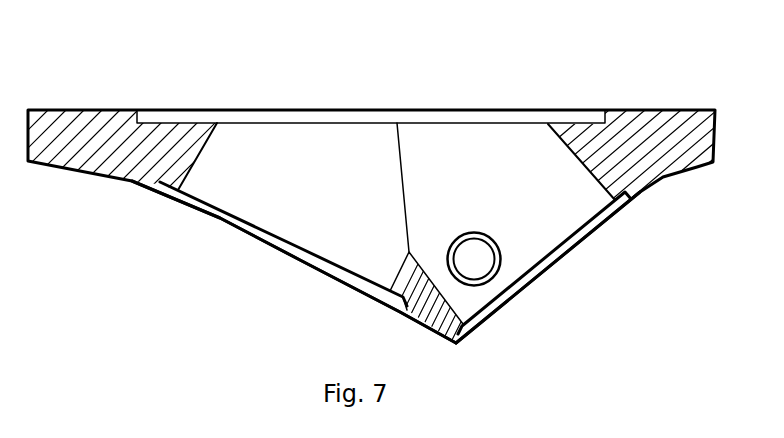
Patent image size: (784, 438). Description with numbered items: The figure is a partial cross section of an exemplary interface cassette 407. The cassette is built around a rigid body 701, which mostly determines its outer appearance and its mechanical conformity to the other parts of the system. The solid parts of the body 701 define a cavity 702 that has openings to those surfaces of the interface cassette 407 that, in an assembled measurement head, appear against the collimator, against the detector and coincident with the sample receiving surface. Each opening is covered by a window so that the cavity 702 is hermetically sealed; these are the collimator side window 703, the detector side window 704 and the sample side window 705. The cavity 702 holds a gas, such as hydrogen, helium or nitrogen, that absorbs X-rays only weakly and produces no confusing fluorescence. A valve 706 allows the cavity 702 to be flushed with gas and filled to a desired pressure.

The interface cassette 407 is at (80, 67).
The rigid body 701 is at (663, 160).
The cavity 702 is at (453, 167).
The collimator side window 703 is at (572, 248).
The detector side window 704 is at (263, 245).
The sample side window 705 is at (387, 108).
The valve 706 is at (477, 270).